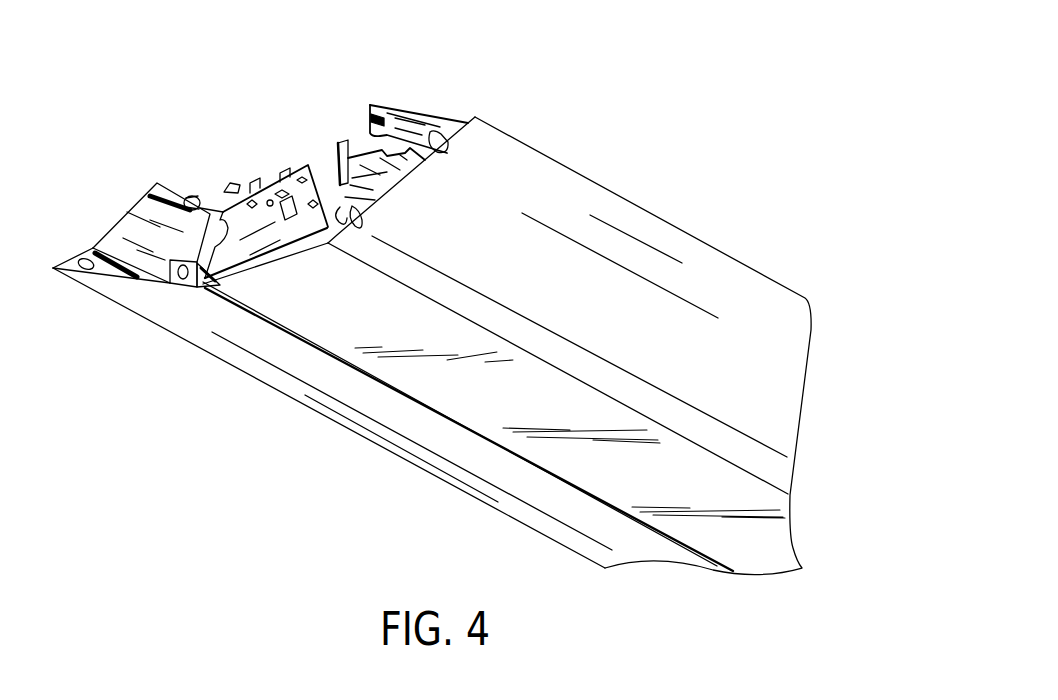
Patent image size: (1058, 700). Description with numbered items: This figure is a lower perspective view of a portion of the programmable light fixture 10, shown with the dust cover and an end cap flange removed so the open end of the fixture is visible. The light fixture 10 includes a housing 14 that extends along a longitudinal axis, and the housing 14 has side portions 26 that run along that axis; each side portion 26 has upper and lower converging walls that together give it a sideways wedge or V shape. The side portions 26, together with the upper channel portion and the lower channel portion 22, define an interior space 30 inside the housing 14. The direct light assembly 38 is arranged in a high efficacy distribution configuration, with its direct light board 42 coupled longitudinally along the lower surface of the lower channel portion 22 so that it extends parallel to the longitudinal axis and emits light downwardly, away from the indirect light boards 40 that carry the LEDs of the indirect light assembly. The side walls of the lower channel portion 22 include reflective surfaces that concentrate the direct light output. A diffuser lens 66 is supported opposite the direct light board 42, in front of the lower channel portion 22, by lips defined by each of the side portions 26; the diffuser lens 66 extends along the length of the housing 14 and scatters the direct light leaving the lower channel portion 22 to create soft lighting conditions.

The light fixture 10 is at (202, 56).
The housing 14 is at (660, 218).
The lower channel portion 22 is at (227, 208).
The side portions 26 is at (542, 182).
The interior space 30 is at (110, 216).
The direct light assembly 38 is at (274, 258).
The indirect light boards 40 is at (352, 142).
The direct light board 42 is at (257, 188).
The diffuser lens 66 is at (332, 322).